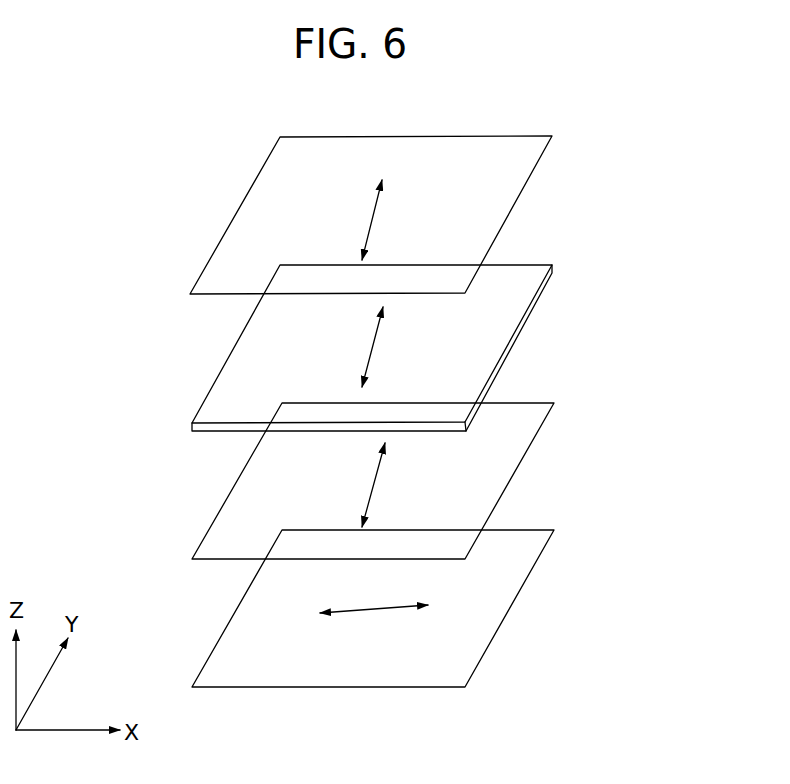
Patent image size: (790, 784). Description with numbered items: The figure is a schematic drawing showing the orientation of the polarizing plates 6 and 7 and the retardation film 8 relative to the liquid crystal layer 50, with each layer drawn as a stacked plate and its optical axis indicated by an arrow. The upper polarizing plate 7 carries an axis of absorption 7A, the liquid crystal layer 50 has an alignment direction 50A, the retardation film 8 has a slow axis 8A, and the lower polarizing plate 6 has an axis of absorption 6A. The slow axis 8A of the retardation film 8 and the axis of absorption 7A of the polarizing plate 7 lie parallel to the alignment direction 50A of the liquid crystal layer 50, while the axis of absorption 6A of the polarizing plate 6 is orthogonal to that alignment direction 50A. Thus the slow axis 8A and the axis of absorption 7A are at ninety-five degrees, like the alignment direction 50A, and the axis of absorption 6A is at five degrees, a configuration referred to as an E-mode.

The polarizing plate 6 is at (515, 567).
The axis of absorption 6A is at (375, 609).
The polarizing plate 7 is at (513, 173).
The axis of absorption 7A is at (374, 218).
The retardation film 8 is at (515, 440).
The slow axis 8A is at (376, 485).
The liquid crystal layer 50 is at (513, 302).
The alignment direction 50A is at (376, 348).